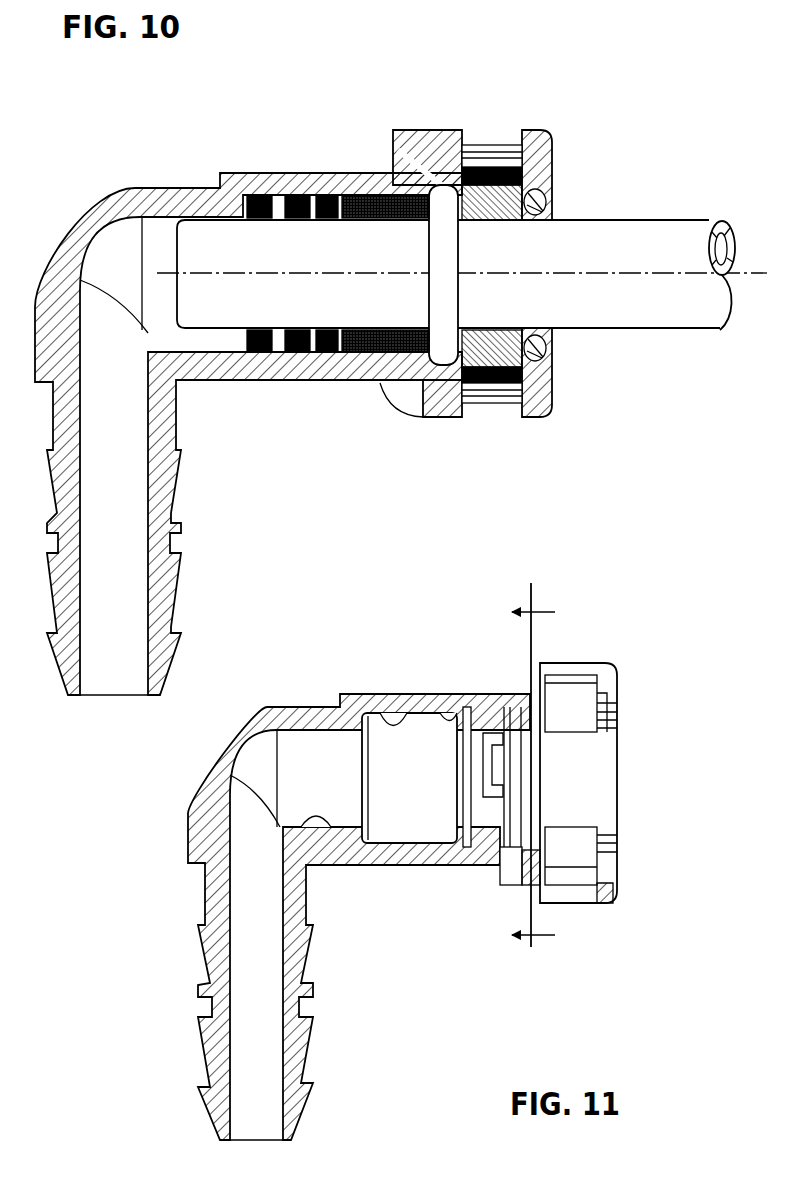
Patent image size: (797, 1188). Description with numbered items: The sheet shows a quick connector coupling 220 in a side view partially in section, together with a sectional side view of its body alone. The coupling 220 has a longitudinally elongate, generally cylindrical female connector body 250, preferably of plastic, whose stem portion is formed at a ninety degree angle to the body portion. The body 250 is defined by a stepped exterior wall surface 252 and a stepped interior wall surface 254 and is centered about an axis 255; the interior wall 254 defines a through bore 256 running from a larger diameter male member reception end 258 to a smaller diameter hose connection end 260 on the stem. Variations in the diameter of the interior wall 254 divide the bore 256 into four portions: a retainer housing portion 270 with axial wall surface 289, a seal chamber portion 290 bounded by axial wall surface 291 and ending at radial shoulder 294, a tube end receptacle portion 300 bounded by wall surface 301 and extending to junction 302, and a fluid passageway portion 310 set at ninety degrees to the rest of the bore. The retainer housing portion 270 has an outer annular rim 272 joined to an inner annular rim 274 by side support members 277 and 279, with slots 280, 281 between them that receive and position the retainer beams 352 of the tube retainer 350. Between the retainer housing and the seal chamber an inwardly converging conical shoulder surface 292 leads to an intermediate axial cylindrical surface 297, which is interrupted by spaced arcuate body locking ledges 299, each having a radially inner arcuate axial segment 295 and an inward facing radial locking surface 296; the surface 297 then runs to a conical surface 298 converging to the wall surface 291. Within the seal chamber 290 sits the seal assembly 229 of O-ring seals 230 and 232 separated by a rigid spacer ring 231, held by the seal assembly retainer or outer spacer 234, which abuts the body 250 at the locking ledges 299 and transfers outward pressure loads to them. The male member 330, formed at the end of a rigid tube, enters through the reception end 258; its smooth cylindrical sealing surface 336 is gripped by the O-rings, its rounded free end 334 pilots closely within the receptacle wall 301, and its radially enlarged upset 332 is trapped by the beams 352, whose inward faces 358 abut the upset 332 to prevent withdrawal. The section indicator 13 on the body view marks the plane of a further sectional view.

In FIG. 10, the quick connector coupling 220 is at (508, 243).
In FIG. 10, the seal assembly 229 is at (288, 183).
In FIG. 10, the O-ring seal 230 is at (262, 356).
In FIG. 10, the spacer ring 231 is at (280, 354).
In FIG. 10, the O-ring seal 232 is at (305, 352).
In FIG. 10, the seal assembly retainer 234 is at (362, 173).
In FIG. 10, the connector body 250 is at (185, 427).
In FIG. 11, the connector body 250 is at (310, 908).
In FIG. 11, the exterior wall surface 252 is at (296, 728).
In FIG. 10, the interior wall surface 254 is at (172, 215).
In FIG. 11, the interior wall surface 254 is at (312, 737).
In FIG. 10, the axis 255 is at (578, 270).
In FIG. 10, the through bore 256 is at (170, 243).
In FIG. 11, the through bore 256 is at (292, 763).
In FIG. 10, the male member reception end 258 is at (560, 183).
In FIG. 11, the male member reception end 258 is at (620, 727).
In FIG. 10, the hose connection end 260 is at (174, 680).
In FIG. 11, the hose connection end 260 is at (314, 1105).
In FIG. 11, the retainer housing portion 270 is at (635, 753).
In FIG. 10, the outer annular rim 272 is at (532, 130).
In FIG. 11, the outer annular rim 272 is at (600, 677).
In FIG. 11, the inner annular rim 274 is at (541, 665).
In FIG. 11, the side support member 277 is at (553, 667).
In FIG. 11, the side support member 279 is at (553, 903).
In FIG. 11, the slot 280 is at (578, 700).
In FIG. 11, the slot 281 is at (582, 842).
In FIG. 11, the axial wall surface 289 is at (545, 853).
In FIG. 11, the seal chamber portion 290 is at (409, 778).
In FIG. 11, the axial wall surface 291 is at (448, 714).
In FIG. 11, the conical shoulder surface 292 is at (520, 862).
In FIG. 11, the radial shoulder 294 is at (393, 713).
In FIG. 11, the radially inner arcuate axial segment 295 is at (495, 755).
In FIG. 11, the radial locking surface 296 is at (482, 862).
In FIG. 11, the intermediate axial cylindrical surface 297 is at (492, 700).
In FIG. 11, the conical surface 298 is at (482, 720).
In FIG. 11, the body locking ledge 299 is at (504, 773).
In FIG. 11, the tube end receptacle portion 300 is at (310, 778).
In FIG. 11, the wall surface 301 is at (334, 830).
In FIG. 11, the junction 302 is at (243, 780).
In FIG. 10, the fluid passageway portion 310 is at (130, 503).
In FIG. 11, the fluid passageway portion 310 is at (270, 962).
In FIG. 10, the male member 330 is at (706, 334).
In FIG. 10, the upset 332 is at (440, 378).
In FIG. 10, the free end 334 is at (152, 338).
In FIG. 10, the sealing surface 336 is at (232, 187).
In FIG. 10, the tube retainer 350 is at (523, 155).
In FIG. 10, the retainer beams 352 is at (553, 197).
In FIG. 10, the inward faces 358 is at (527, 340).
In FIG. 11, the section line 13- 13 is at (533, 769).